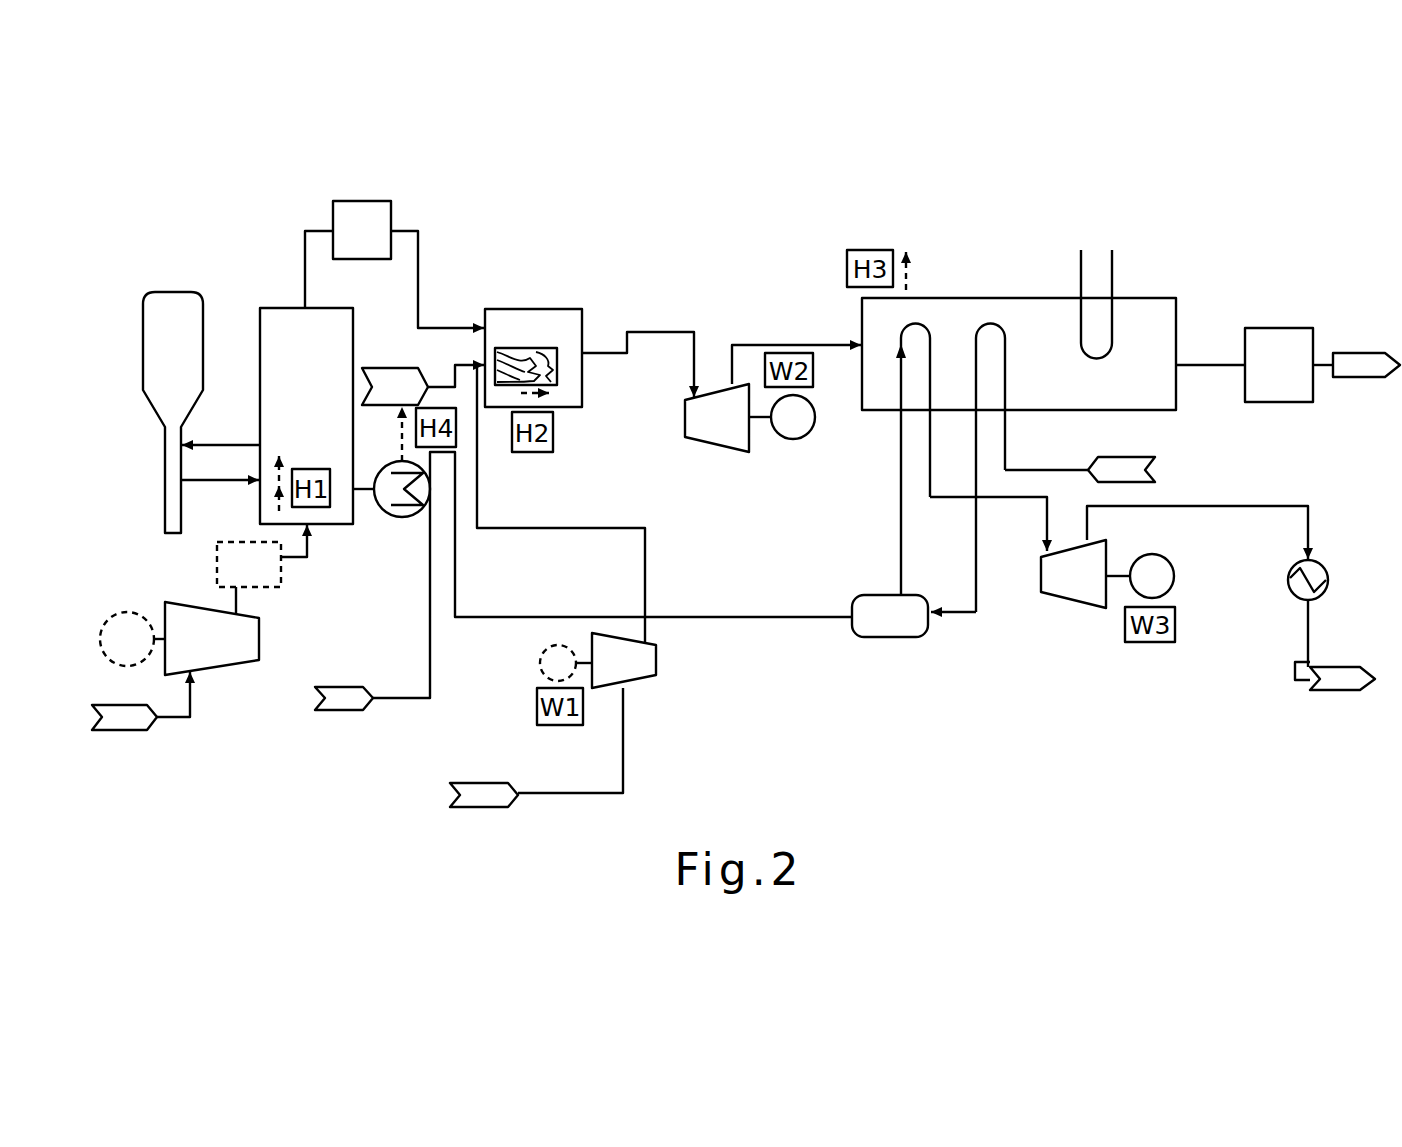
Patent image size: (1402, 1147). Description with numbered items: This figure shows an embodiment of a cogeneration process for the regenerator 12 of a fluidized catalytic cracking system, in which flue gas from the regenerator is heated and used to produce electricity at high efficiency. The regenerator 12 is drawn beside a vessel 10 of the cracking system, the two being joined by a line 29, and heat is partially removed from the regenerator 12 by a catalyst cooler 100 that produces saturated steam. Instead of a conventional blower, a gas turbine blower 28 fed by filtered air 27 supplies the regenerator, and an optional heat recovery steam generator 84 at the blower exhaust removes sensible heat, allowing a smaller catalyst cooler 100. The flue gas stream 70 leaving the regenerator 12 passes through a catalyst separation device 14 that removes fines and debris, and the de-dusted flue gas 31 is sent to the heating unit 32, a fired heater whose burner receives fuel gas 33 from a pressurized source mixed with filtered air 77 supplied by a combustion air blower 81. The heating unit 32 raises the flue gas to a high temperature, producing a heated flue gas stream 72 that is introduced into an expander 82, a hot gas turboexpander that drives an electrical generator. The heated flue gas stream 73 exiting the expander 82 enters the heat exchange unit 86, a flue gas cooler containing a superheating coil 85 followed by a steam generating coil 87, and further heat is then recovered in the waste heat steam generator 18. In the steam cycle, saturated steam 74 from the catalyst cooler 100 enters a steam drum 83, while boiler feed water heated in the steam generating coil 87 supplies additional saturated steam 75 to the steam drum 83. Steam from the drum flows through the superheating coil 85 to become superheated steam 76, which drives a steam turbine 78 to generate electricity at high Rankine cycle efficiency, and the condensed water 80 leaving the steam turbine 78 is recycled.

The reactor vessel 10 is at (143, 372).
The regenerator 12 is at (306, 416).
The catalyst separation device 14 is at (362, 230).
The waste heat steam generator 18 is at (1288, 365).
The filtered air 27 is at (141, 701).
The gas turbine blower 28 is at (179, 638).
The regenerated catalyst line 29 is at (221, 429).
The de-dusted flue gas 31 is at (437, 279).
The heating unit 32 is at (585, 305).
The fuel gas 33 is at (423, 385).
The flue gas stream 70 is at (300, 269).
The heated flue gas stream 72 is at (638, 347).
The heated flue gas stream 73 is at (796, 348).
The saturated steam source 74 is at (612, 575).
The saturated steam 75 is at (953, 582).
The superheated steam 76 is at (988, 524).
The filtered air 77 is at (536, 747).
The steam turbine 78 is at (1107, 574).
The condensed water 80 is at (1231, 581).
The combustion air blower 81 is at (598, 660).
The expander 82 is at (750, 418).
The steam drum 83 is at (890, 616).
The heat recovery steam generator 84 is at (262, 569).
The superheating coil 85 is at (913, 335).
The heat exchange unit 86 is at (1177, 318).
The steam generating coil 87 is at (992, 335).
The catalyst cooler 100 is at (402, 517).